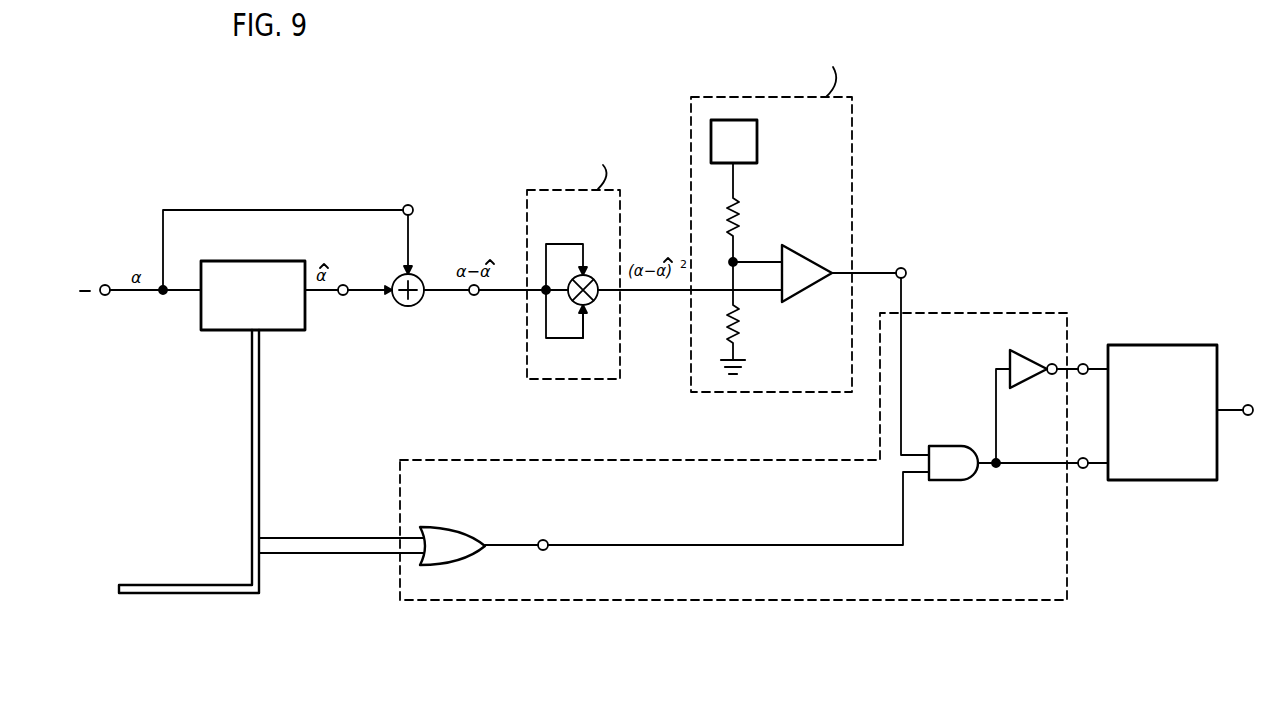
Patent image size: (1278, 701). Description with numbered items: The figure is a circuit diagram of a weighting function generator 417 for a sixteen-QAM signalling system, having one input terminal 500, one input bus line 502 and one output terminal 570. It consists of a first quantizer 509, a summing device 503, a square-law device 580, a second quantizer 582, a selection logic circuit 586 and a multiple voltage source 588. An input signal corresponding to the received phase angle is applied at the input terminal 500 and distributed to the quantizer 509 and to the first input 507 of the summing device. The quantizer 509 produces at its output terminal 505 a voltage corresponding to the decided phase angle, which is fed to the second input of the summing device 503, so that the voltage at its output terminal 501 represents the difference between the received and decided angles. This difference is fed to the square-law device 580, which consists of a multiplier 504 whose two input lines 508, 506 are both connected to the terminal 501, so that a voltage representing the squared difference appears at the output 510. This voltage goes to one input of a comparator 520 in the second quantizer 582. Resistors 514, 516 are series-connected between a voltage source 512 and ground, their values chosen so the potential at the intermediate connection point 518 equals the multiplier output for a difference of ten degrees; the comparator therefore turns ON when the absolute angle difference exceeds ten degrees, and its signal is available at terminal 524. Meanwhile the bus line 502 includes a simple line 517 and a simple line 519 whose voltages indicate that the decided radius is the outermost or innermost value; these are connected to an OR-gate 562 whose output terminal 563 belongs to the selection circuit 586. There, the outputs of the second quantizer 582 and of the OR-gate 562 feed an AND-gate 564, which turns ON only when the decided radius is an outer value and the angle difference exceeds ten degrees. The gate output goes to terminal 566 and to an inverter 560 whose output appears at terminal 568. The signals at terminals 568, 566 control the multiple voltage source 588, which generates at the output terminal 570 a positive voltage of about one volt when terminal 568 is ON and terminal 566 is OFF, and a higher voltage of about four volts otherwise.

The weighting function generator 417 is at (327, 652).
The input terminal 500 is at (103, 286).
The output terminal of the summing device 501 is at (477, 296).
The input bus line 502 is at (117, 584).
The summing device 503 is at (421, 302).
The multiplier 504 is at (597, 299).
The output terminal of the first quantizer 505 is at (343, 297).
The input line of the multiplier 506 is at (587, 330).
The first input of the summing device 507 is at (408, 205).
The input line of the multiplier 508 is at (594, 281).
The first quantizer 509 is at (263, 260).
The output of the multiplier 510 is at (672, 293).
The voltage source 512 is at (748, 148).
The resistor 514 is at (740, 208).
The resistor 516 is at (740, 318).
The simple line 517 is at (340, 514).
The intermediate connection point 518 is at (737, 245).
The simple line 519 is at (308, 555).
The comparator 520 is at (805, 268).
The output terminal of the second quantizer 524 is at (902, 266).
The inverter 560 is at (1022, 352).
The OR-gate 562 is at (458, 538).
The output terminal of the OR-gate 563 is at (546, 539).
The AND-gate 564 is at (960, 472).
The terminal 566 is at (1083, 470).
The terminal 568 is at (1086, 361).
The output terminal 570 is at (1247, 416).
The square-law device 580 is at (620, 208).
The second quantizer 582 is at (852, 167).
The selection logic circuit 586 is at (560, 601).
The multiple voltage source 588 is at (1175, 470).